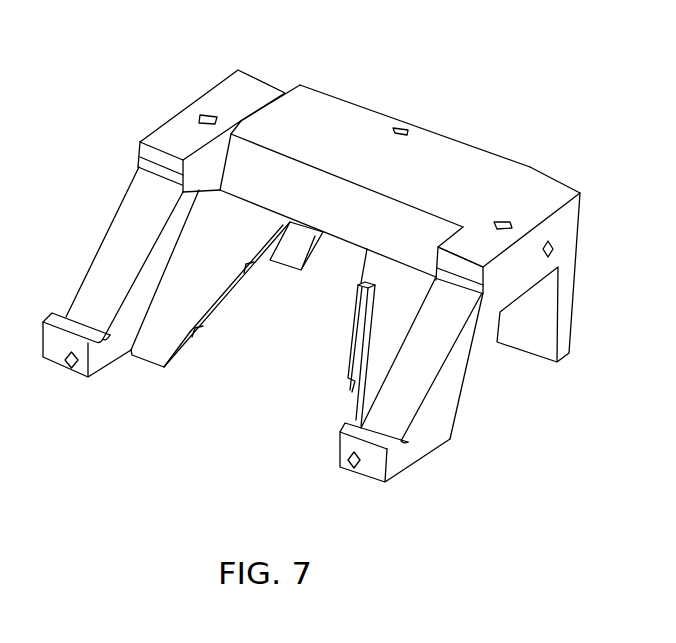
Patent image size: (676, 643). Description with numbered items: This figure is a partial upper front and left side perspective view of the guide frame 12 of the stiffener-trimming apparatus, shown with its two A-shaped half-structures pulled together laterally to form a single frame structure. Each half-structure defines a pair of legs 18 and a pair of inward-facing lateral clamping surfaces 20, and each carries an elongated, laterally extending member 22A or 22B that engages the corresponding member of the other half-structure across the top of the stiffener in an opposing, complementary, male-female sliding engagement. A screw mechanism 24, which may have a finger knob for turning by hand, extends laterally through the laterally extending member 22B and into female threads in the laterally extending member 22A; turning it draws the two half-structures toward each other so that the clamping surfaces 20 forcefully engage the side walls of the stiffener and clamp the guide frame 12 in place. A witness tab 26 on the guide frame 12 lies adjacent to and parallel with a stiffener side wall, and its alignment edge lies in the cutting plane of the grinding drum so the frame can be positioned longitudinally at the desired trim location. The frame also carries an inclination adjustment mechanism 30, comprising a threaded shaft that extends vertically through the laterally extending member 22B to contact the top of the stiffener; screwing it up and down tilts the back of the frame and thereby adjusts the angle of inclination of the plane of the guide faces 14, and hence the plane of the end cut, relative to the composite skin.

The guide frame 12 is at (336, 256).
The guide faces 14 is at (118, 239).
The legs 18 is at (111, 348).
The inward-facing lateral clamping surfaces 20 is at (262, 258).
The laterally extending member 22A is at (251, 112).
The laterally extending member 22B is at (503, 170).
The screw mechanism 24 is at (552, 246).
The witness tab 26 is at (345, 391).
The inclination adjustment mechanism 30 is at (408, 127).